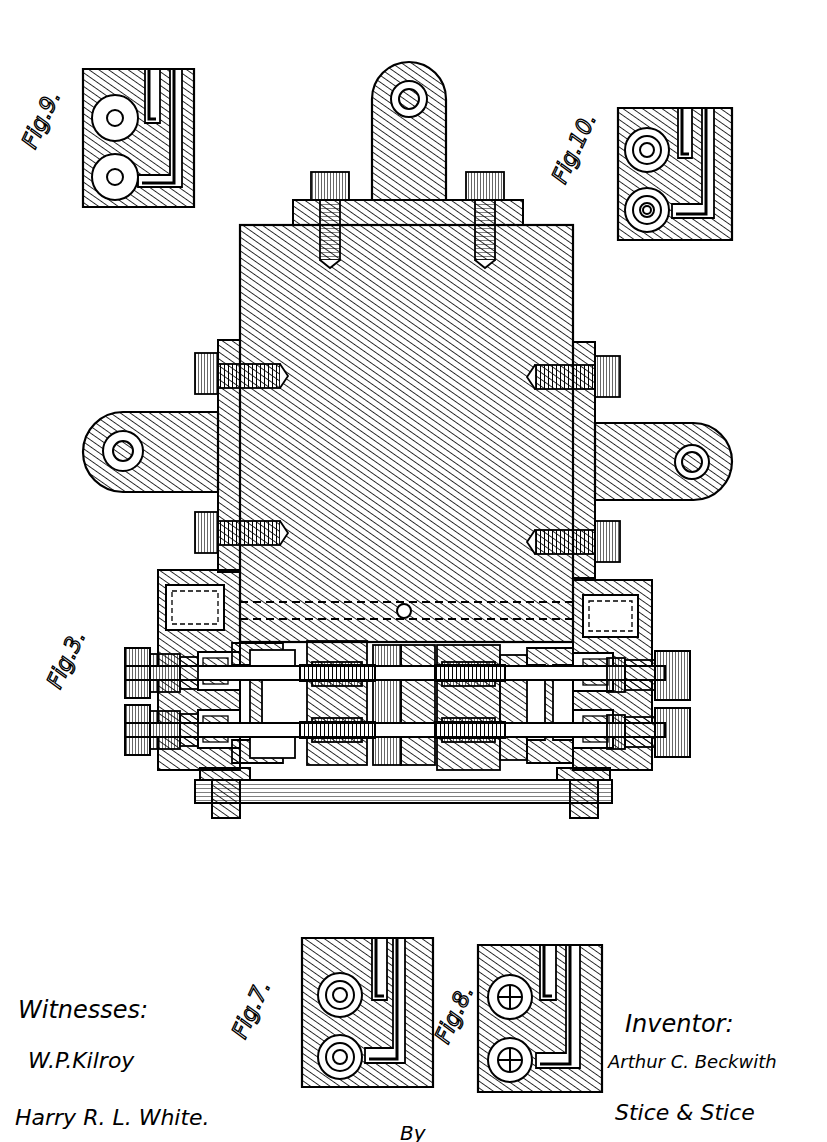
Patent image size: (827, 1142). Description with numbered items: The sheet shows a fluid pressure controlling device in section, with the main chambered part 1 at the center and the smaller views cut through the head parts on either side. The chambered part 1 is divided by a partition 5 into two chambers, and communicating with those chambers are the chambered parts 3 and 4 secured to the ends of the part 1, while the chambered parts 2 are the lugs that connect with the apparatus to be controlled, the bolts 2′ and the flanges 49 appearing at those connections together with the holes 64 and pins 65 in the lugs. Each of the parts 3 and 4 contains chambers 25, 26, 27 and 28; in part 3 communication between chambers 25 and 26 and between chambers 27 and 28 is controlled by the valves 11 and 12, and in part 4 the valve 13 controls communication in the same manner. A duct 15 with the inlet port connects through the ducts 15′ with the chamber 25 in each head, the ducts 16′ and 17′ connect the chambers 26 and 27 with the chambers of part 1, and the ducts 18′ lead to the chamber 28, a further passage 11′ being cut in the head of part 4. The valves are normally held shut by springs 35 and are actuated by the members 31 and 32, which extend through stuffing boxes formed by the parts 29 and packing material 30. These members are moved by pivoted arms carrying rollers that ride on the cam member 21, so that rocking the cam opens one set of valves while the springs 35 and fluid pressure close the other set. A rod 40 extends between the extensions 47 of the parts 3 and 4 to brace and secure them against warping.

In FIG. 3, the chambered part 1 is at (575, 290).
In FIG. 3, the chambered parts 2 is at (372, 110).
In FIG. 3, the bolt 2′ is at (330, 172).
In FIG. 3, the chambered part 3 is at (158, 590).
In FIG. 7, the chambered part 3 is at (330, 938).
In FIG. 8, the chambered part 3 is at (500, 945).
In FIG. 3, the chambered part 4 is at (652, 585).
In FIG. 9, the chambered part 4 is at (125, 69).
In FIG. 10, the chambered part 4 is at (655, 108).
In FIG. 3, the partition 5 is at (240, 295).
In FIG. 3, the valve 11 is at (160, 670).
In FIG. 8, the valve 11 is at (490, 990).
In FIG. 3, the valve 12 is at (160, 735).
In FIG. 8, the valve 12 is at (505, 1072).
In FIG. 3, the valve 13 is at (404, 705).
In FIG. 3, the duct 15 is at (400, 605).
In FIG. 10, the duct 15′ is at (685, 108).
In FIG. 7, the duct 15′ is at (379, 938).
In FIG. 10, the duct 16′ is at (708, 108).
In FIG. 8, the duct 16′ is at (548, 945).
In FIG. 7, the duct 17′ is at (400, 938).
In FIG. 9, the duct 18′ is at (176, 69).
In FIG. 8, the duct 18′ is at (573, 945).
In FIG. 9, the passage 11′ is at (150, 69).
In FIG. 3, the cam member 21 is at (280, 672).
In FIG. 3, the chamber 25 is at (125, 720).
In FIG. 10, the chamber 25 is at (635, 135).
In FIG. 7, the chamber 25 is at (325, 980).
In FIG. 3, the chamber 26 is at (140, 648).
In FIG. 10, the chamber 26 is at (647, 210).
In FIG. 8, the chamber 26 is at (515, 985).
In FIG. 3, the chamber 27 is at (195, 750).
In FIG. 9, the chamber 27 is at (105, 110).
In FIG. 7, the chamber 27 is at (335, 1052).
In FIG. 3, the chamber 28 is at (200, 760).
In FIG. 9, the chamber 28 is at (100, 183).
In FIG. 8, the chamber 28 is at (510, 1072).
In FIG. 3, the stuffing box part 29 is at (515, 760).
In FIG. 3, the packing material 30 is at (490, 770).
In FIG. 3, the member 31 is at (290, 690).
In FIG. 3, the member 32 is at (320, 765).
In FIG. 3, the spring 35 is at (165, 665).
In FIG. 10, the spring 35 is at (647, 150).
In FIG. 7, the spring 35 is at (340, 995).
In FIG. 3, the rod 40 is at (325, 803).
In FIG. 3, the extension 47 is at (226, 818).
In FIG. 3, the flange plate 49 is at (222, 566).
In FIG. 3, the bore 64 is at (398, 88).
In FIG. 3, the pin 65 is at (419, 99).